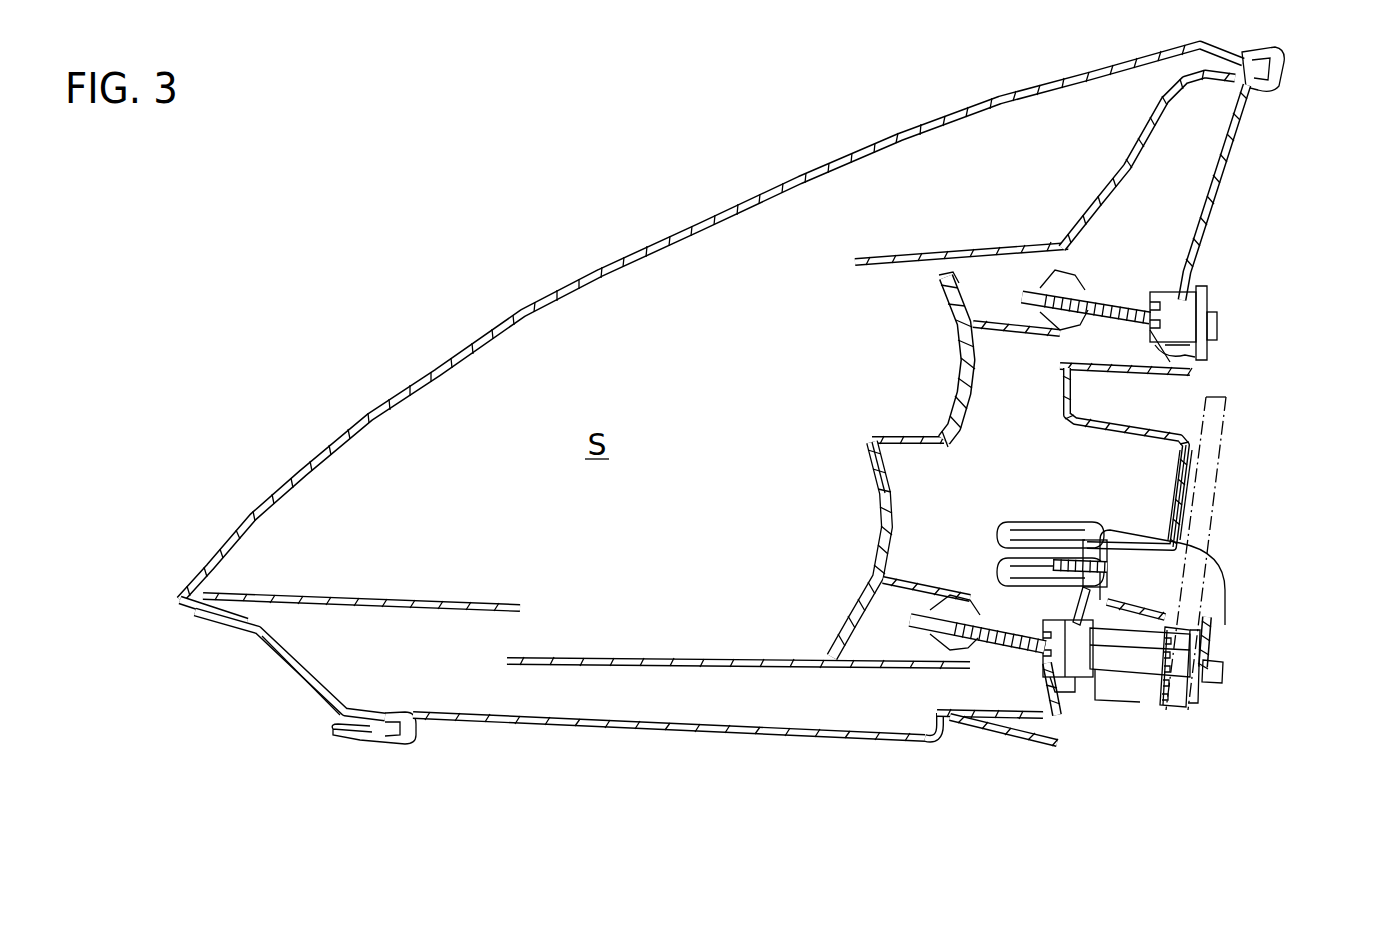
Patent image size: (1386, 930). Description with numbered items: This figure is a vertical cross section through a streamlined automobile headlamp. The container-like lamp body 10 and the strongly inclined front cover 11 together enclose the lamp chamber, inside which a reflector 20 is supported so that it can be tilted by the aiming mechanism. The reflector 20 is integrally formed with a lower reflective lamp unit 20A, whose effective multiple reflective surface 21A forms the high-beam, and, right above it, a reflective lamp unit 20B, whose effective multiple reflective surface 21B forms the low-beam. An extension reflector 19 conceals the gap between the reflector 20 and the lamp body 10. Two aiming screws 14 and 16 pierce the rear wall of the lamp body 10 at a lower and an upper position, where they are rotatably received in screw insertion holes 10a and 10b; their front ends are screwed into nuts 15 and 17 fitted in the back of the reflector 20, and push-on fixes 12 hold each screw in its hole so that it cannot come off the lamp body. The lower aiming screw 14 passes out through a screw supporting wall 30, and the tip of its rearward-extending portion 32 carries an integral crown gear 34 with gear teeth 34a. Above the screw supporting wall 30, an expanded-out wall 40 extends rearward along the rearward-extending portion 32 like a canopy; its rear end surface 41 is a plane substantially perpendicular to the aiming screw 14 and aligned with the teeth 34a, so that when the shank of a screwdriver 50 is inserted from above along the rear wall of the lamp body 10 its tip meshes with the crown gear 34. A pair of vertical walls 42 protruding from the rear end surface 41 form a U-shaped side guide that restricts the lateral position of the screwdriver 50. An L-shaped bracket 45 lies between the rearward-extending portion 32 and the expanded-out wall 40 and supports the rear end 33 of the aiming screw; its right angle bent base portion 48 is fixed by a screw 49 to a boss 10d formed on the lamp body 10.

The lamp body 10 is at (1230, 148).
The screw insertion hole 10a is at (1060, 690).
The screw insertion hole 10b is at (1215, 330).
The boss 10d is at (1048, 522).
The front cover 11 is at (628, 250).
The push-on fix 12 is at (1192, 357).
The aiming screw 14 is at (1000, 665).
The nut 15 is at (925, 637).
The aiming screw 16 is at (1160, 275).
The nut 17 is at (1045, 280).
The extension reflector 19 is at (243, 595).
The reflector 20 is at (783, 470).
The reflective lamp unit 20A is at (875, 541).
The reflective lamp unit 20B is at (945, 349).
The effective multiple reflective surface 21A is at (878, 498).
The effective multiple reflective surface 21B is at (942, 392).
The screw supporting wall 30 is at (1100, 705).
The rearward-extending portion 32 is at (1155, 735).
The rear end 33 is at (1215, 667).
The crown gear 34 is at (1200, 713).
The gear teeth 34a is at (1195, 730).
The expanded-out wall 40 is at (1195, 497).
The rear end surface 41 is at (1192, 523).
The vertical walls 42 is at (1212, 460).
The bracket 45 is at (1230, 625).
The right angle bent base portion 48 is at (1110, 555).
The screw 49 is at (1226, 585).
The screwdriver 50 is at (1232, 413).